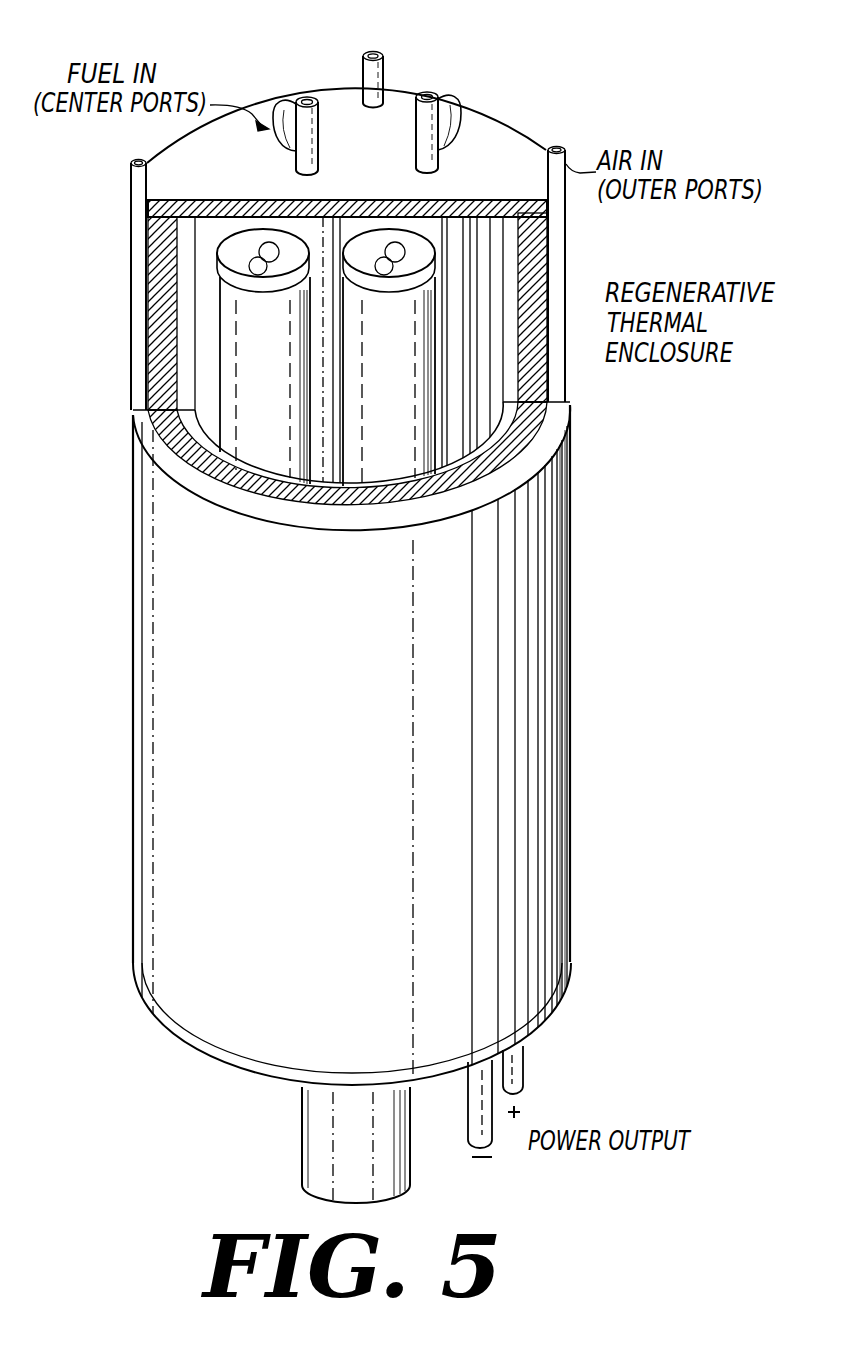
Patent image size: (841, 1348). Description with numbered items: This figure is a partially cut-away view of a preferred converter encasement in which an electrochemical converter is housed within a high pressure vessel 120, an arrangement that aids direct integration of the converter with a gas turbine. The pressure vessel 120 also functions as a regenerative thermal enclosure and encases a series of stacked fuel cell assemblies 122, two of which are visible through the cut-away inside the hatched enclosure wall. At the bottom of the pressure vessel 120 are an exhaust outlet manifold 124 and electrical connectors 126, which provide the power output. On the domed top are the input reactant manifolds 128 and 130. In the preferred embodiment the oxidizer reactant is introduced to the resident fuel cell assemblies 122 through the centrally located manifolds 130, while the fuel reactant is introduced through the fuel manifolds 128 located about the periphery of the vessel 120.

The pressure vessel 120 is at (533, 738).
The stacked fuel cell assemblies 122 is at (463, 248).
The exhaust outlet manifold 124 is at (326, 1148).
The electrical connectors 126 is at (481, 1083).
The input reactant manifolds (fuel manifolds) 128 is at (133, 182).
The input reactant manifolds (oxidizer manifolds) 130 is at (309, 96).